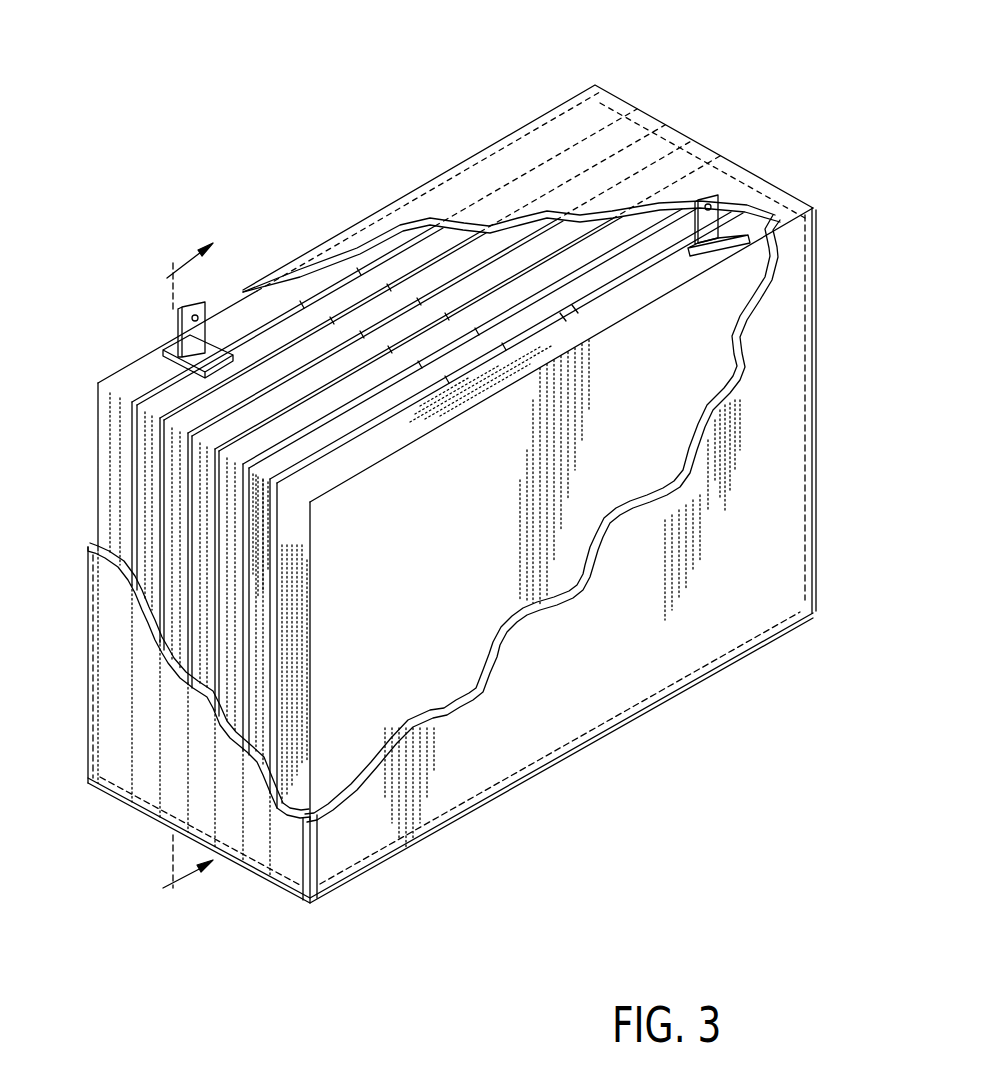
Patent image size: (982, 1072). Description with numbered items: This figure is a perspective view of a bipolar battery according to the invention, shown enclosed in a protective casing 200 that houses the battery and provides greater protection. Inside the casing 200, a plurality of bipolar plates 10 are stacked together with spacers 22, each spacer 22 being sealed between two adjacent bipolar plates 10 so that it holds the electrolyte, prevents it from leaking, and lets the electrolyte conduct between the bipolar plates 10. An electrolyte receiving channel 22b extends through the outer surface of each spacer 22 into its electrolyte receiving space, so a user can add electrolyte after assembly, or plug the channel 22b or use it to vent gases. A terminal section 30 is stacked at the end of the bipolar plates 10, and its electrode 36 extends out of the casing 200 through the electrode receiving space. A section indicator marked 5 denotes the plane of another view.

The protective casing 200 is at (451, 461).
The terminal section 30 is at (103, 371).
The bipolar plate 10 is at (400, 295).
The spacer 22 is at (226, 428).
The electrolyte receiving channel 22b is at (500, 257).
The electrode 36 is at (193, 298).
The section line 5- 5 is at (175, 579).